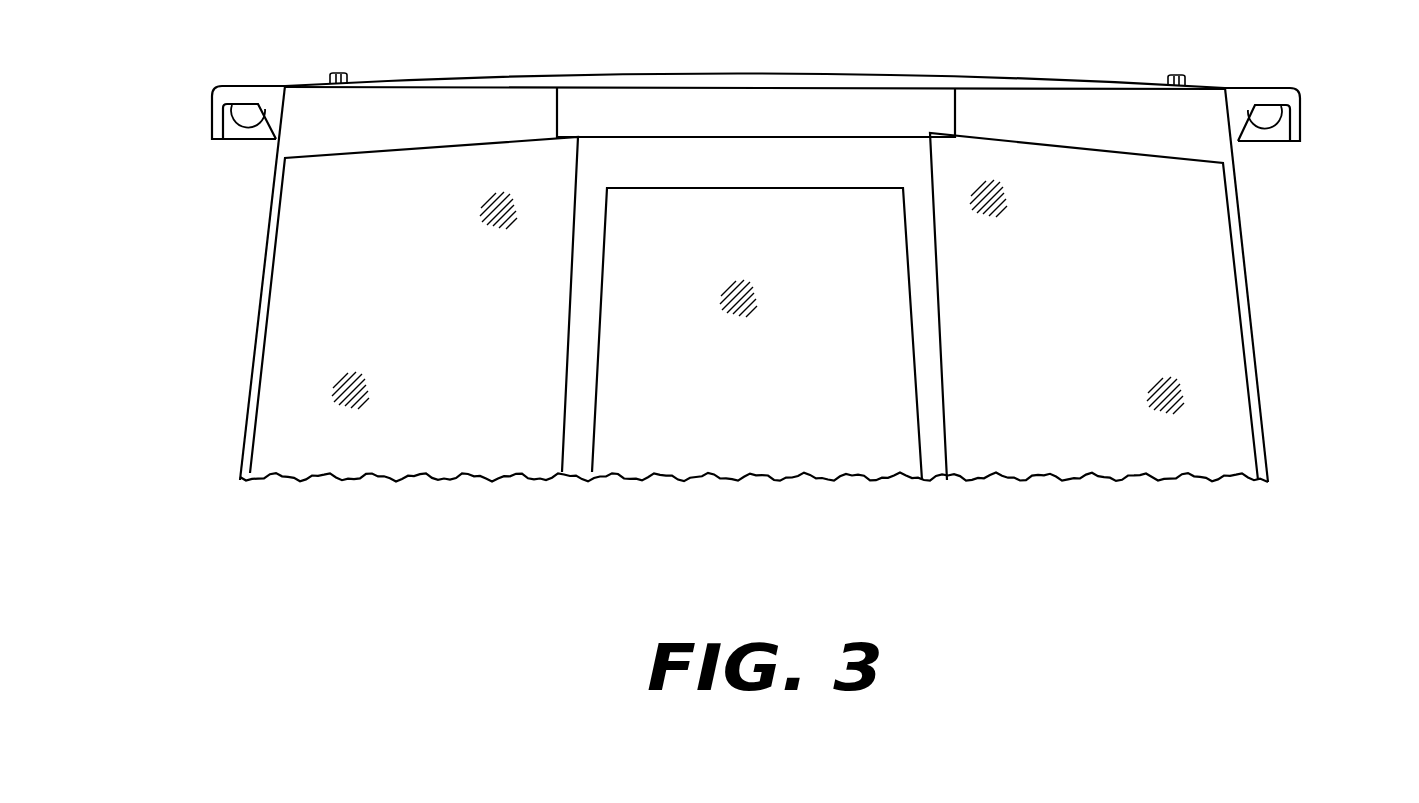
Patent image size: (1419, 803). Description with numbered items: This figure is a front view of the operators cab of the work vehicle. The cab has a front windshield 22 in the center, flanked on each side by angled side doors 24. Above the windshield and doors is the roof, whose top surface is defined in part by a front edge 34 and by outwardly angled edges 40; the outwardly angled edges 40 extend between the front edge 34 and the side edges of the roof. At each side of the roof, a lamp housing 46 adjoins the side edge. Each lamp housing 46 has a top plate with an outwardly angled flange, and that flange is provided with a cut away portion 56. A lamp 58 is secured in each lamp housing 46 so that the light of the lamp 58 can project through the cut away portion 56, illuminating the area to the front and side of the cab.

The front windshield 22 is at (728, 413).
The angled side doors 24 is at (440, 326).
The front edge 34 is at (770, 105).
The outwardly angled edges 40 is at (443, 102).
The lamp housings 46 is at (250, 86).
The cut away portion 56 is at (210, 114).
The lamp 58 is at (248, 123).